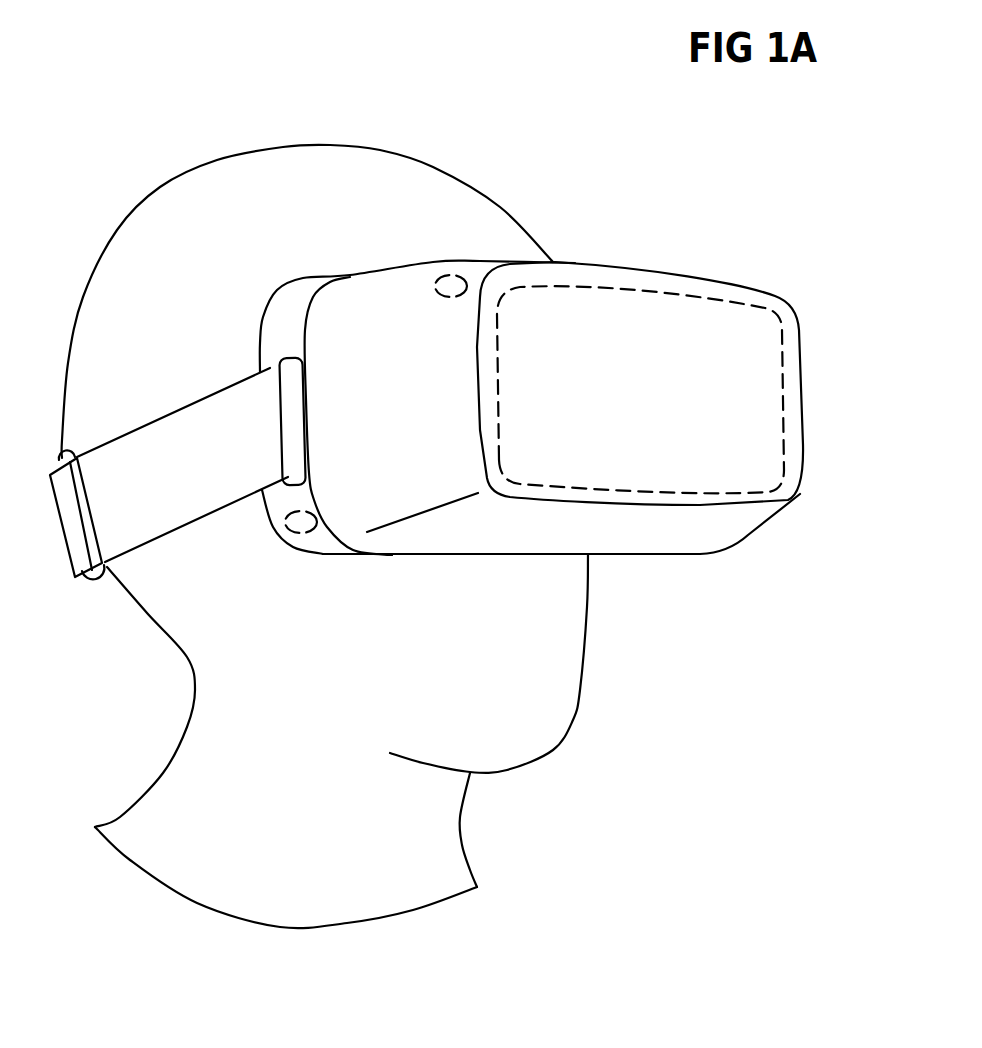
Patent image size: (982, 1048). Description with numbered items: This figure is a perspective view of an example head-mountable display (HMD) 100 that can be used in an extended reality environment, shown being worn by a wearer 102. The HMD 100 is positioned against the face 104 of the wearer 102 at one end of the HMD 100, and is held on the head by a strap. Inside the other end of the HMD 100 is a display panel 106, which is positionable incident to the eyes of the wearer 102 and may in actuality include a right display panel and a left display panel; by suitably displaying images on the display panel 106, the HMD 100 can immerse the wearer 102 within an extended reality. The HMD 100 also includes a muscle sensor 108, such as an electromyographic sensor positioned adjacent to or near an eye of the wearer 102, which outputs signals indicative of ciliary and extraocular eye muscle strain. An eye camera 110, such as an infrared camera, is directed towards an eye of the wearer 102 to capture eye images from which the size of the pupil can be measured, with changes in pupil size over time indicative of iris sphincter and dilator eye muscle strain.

The head-mountable display (HMD) 100 is at (753, 517).
The wearer 102 is at (122, 671).
The face 104 is at (553, 742).
The display panel 106 is at (622, 397).
The muscle sensor 108 is at (293, 533).
The eye camera 110 is at (437, 278).